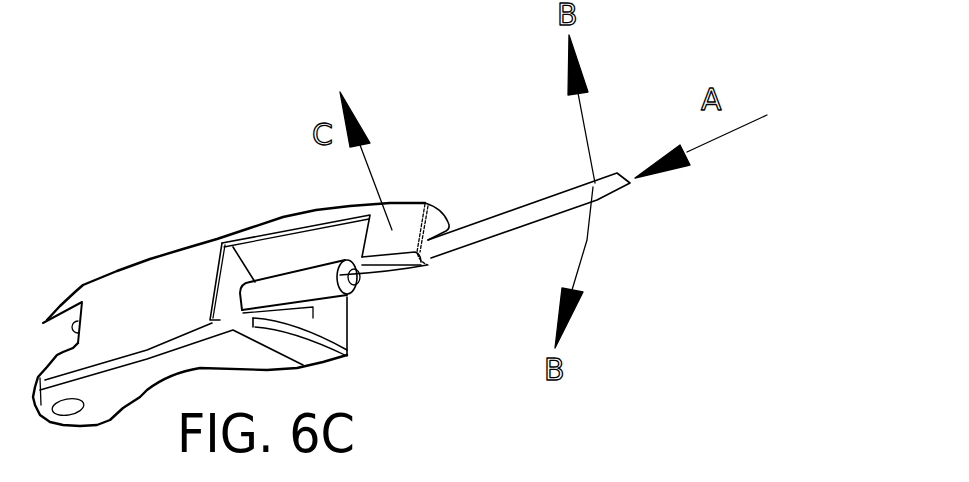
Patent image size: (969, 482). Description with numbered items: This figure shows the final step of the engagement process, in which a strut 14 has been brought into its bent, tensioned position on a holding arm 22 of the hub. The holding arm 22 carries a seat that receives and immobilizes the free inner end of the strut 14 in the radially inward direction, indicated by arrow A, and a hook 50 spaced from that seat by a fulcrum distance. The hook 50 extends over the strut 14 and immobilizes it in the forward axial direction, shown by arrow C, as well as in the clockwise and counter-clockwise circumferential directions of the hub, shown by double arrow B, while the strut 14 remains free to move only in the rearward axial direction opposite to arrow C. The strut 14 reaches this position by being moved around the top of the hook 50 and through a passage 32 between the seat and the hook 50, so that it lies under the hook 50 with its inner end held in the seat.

The strut 14 is at (527, 213).
The holding arm 22 is at (170, 326).
The passage 32 is at (365, 297).
The hook 50 is at (408, 265).